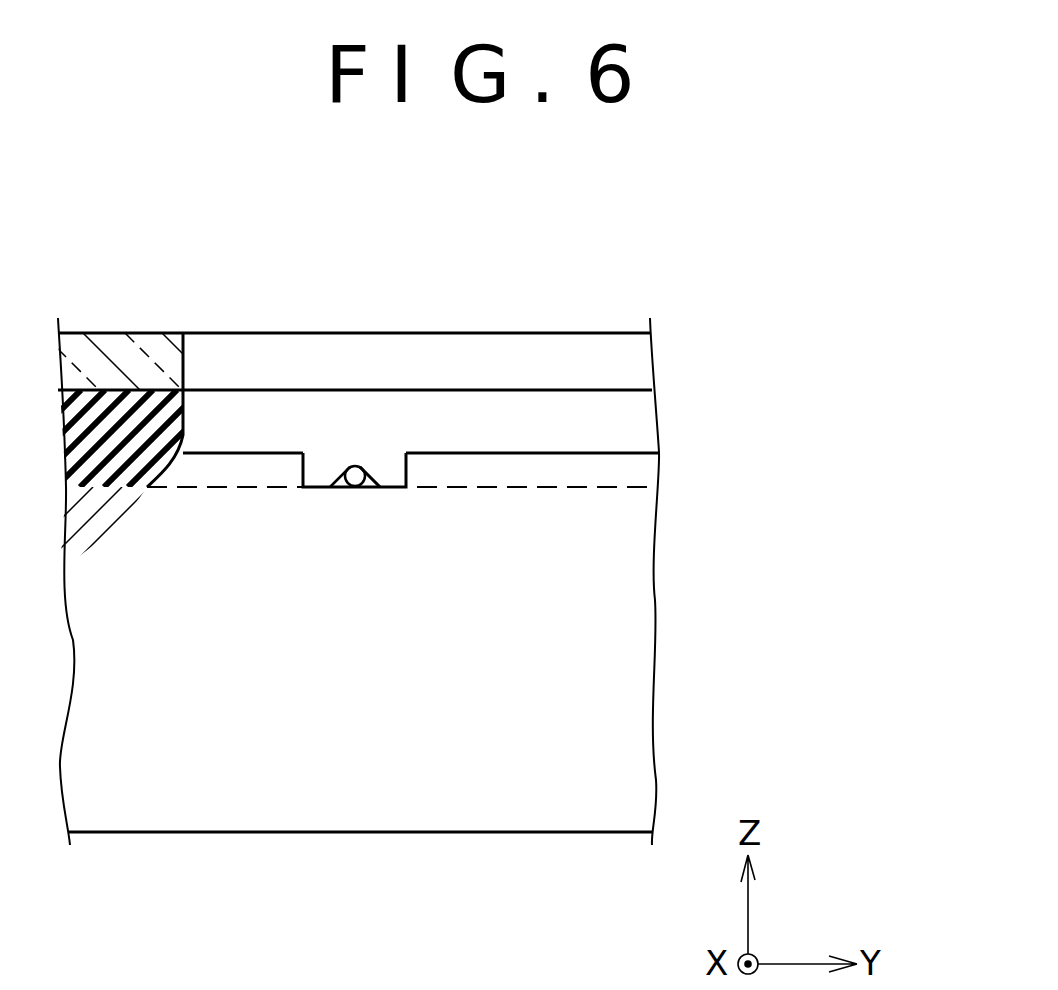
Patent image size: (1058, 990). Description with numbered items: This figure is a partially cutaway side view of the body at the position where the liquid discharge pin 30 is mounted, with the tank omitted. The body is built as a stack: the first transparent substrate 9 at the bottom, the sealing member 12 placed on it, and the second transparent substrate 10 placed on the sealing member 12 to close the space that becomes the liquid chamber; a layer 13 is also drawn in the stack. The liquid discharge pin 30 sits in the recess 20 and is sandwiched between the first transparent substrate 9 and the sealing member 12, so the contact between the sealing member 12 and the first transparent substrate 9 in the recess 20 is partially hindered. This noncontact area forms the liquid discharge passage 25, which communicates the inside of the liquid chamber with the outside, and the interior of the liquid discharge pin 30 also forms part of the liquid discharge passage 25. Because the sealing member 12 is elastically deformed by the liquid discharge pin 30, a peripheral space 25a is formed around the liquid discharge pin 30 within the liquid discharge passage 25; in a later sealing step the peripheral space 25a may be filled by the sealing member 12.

The first transparent substrate 9 is at (512, 868).
The second transparent substrate 10 is at (491, 333).
The sealing member 12 is at (638, 422).
The second layer 13 is at (638, 469).
The recess 20 is at (307, 465).
The liquid discharge passage 25 is at (340, 490).
The peripheral space 25a is at (369, 490).
The liquid discharge pin 30 is at (357, 477).